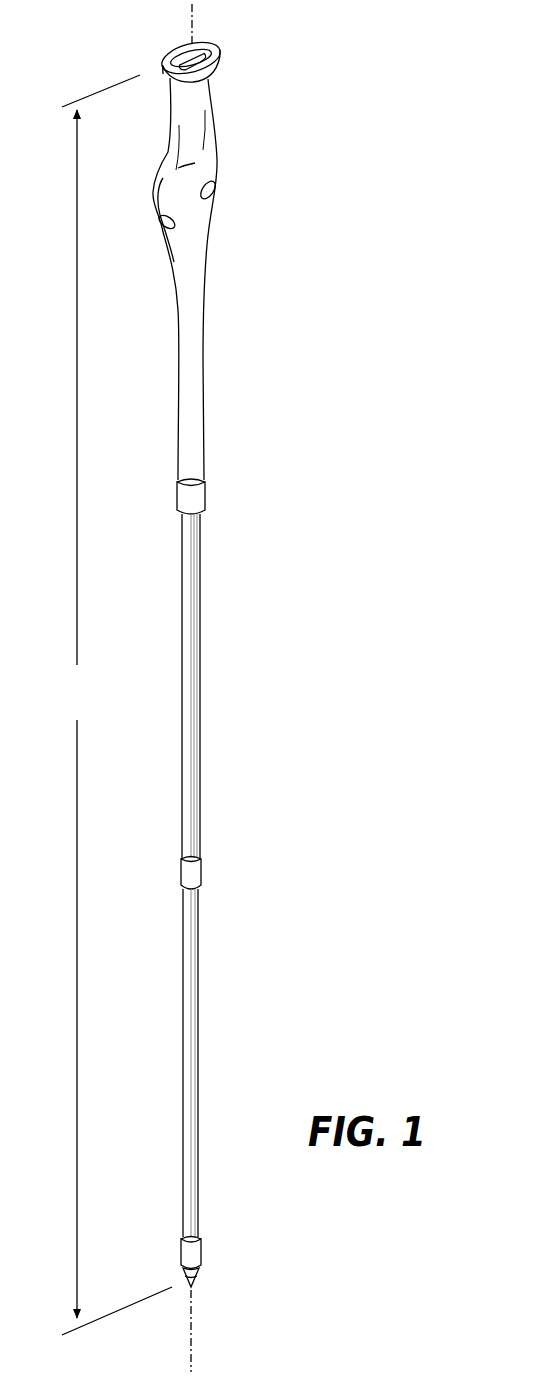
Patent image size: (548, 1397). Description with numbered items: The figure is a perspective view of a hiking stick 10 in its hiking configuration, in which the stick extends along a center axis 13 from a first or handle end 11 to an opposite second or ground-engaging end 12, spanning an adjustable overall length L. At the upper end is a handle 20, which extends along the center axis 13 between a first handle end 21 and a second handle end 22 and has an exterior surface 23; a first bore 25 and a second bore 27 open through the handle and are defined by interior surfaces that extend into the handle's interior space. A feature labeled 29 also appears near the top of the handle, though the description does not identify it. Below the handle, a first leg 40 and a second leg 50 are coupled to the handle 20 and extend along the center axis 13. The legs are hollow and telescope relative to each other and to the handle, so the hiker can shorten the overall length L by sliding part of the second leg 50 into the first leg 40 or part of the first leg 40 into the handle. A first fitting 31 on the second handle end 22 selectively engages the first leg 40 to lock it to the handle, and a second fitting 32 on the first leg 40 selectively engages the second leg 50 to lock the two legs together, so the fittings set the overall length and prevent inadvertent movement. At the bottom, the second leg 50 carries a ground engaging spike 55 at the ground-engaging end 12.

The hiking stick 10 is at (362, 641).
The handle end 11 is at (154, 82).
The ground-engaging end 12 is at (236, 1247).
The center axis 13 is at (195, 31).
The handle 20 is at (191, 243).
The first handle end 21 is at (209, 279).
The second handle end 22 is at (192, 510).
The exterior surface 23 is at (192, 316).
The first bore 25 is at (221, 193).
The second bore 27 is at (154, 230).
The cap / end piece 29 is at (160, 78).
The first fitting 31 is at (196, 497).
The second fitting 32 is at (196, 874).
The first leg 40 is at (196, 715).
The second leg 50 is at (195, 1078).
The ground engaging spike 55 is at (196, 1251).
The overall length L is at (117, 705).